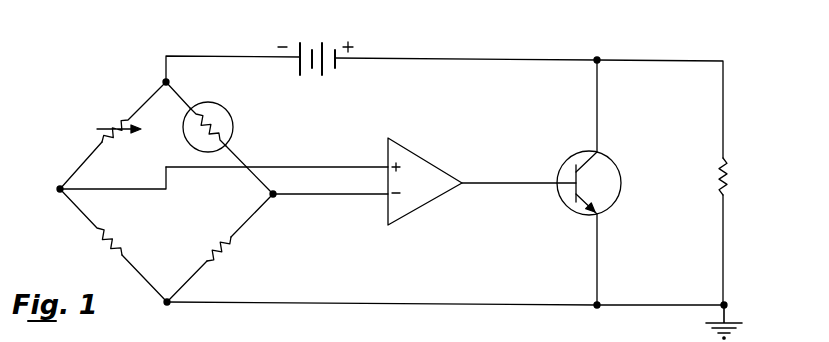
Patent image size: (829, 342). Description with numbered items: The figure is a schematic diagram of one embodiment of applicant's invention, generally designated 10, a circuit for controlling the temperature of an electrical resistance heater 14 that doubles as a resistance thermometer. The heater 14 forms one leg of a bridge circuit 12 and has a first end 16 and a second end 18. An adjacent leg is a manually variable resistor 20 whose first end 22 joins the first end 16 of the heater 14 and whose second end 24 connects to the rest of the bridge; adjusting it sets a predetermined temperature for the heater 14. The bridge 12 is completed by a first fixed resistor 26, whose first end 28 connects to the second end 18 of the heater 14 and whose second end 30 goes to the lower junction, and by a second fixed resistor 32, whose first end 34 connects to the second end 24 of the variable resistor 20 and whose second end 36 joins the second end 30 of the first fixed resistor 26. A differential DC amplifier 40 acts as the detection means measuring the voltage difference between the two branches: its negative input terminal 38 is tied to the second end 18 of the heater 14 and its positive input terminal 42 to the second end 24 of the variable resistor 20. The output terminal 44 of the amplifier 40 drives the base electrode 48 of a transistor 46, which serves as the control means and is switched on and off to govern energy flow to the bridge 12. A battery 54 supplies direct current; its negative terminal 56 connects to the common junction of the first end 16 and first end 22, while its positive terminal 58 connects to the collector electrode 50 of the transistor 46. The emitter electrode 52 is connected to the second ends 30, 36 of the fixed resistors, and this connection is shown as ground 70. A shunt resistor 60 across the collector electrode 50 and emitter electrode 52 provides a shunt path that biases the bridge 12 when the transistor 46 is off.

The temperature control circuit 10 is at (614, 39).
The bridge circuit 12 is at (282, 232).
The electrical resistance heater 14 is at (194, 101).
The first end of electrical resistance heater 16 is at (171, 85).
The second end of electrical resistance heater 18 is at (240, 157).
The variable resistor 20 is at (124, 125).
The first end of variable resistor 22 is at (158, 86).
The second end of variable resistor 24 is at (82, 164).
The first fixed resistor 26 is at (234, 243).
The first end of first fixed resistor 28 is at (273, 197).
The second end of first fixed resistor 30 is at (196, 272).
The second fixed resistor 32 is at (110, 235).
The first end of second fixed resistor 34 is at (87, 219).
The second end of second fixed resistor 36 is at (139, 272).
The negative input terminal 38 is at (385, 207).
The differential DC amplifier 40 is at (437, 153).
The positive input terminal 42 is at (384, 163).
The output terminal 44 is at (466, 182).
The transistor 46 is at (596, 154).
The base electrode 48 is at (556, 186).
The collector electrode 50 is at (607, 116).
The emitter electrode 52 is at (611, 249).
The battery 54 is at (335, 50).
The negative terminal 56 is at (300, 46).
The positive terminal 58 is at (300, 73).
The shunt resistor 60 is at (735, 136).
The ground 70 is at (612, 323).